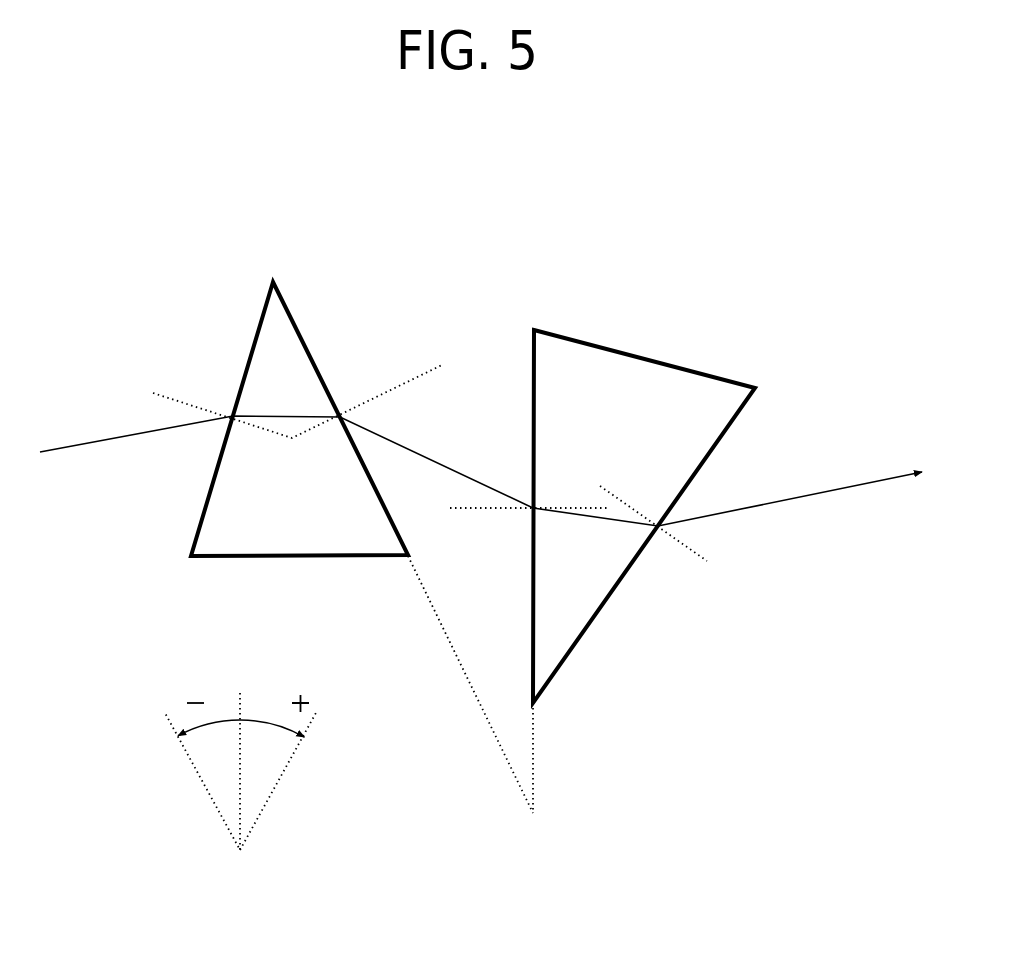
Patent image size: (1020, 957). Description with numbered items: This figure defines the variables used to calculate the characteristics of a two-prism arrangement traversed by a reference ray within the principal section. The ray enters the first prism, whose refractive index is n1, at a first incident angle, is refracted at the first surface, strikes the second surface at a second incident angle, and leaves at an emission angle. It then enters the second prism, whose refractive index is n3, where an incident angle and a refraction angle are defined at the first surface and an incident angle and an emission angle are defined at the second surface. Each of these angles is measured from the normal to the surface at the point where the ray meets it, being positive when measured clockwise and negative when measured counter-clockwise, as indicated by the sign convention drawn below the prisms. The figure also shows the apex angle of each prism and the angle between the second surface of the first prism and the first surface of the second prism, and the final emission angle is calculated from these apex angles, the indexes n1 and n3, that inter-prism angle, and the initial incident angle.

The refractive index of the first prism n1 is at (303, 523).
The refractive index of the second prism n3 is at (644, 410).